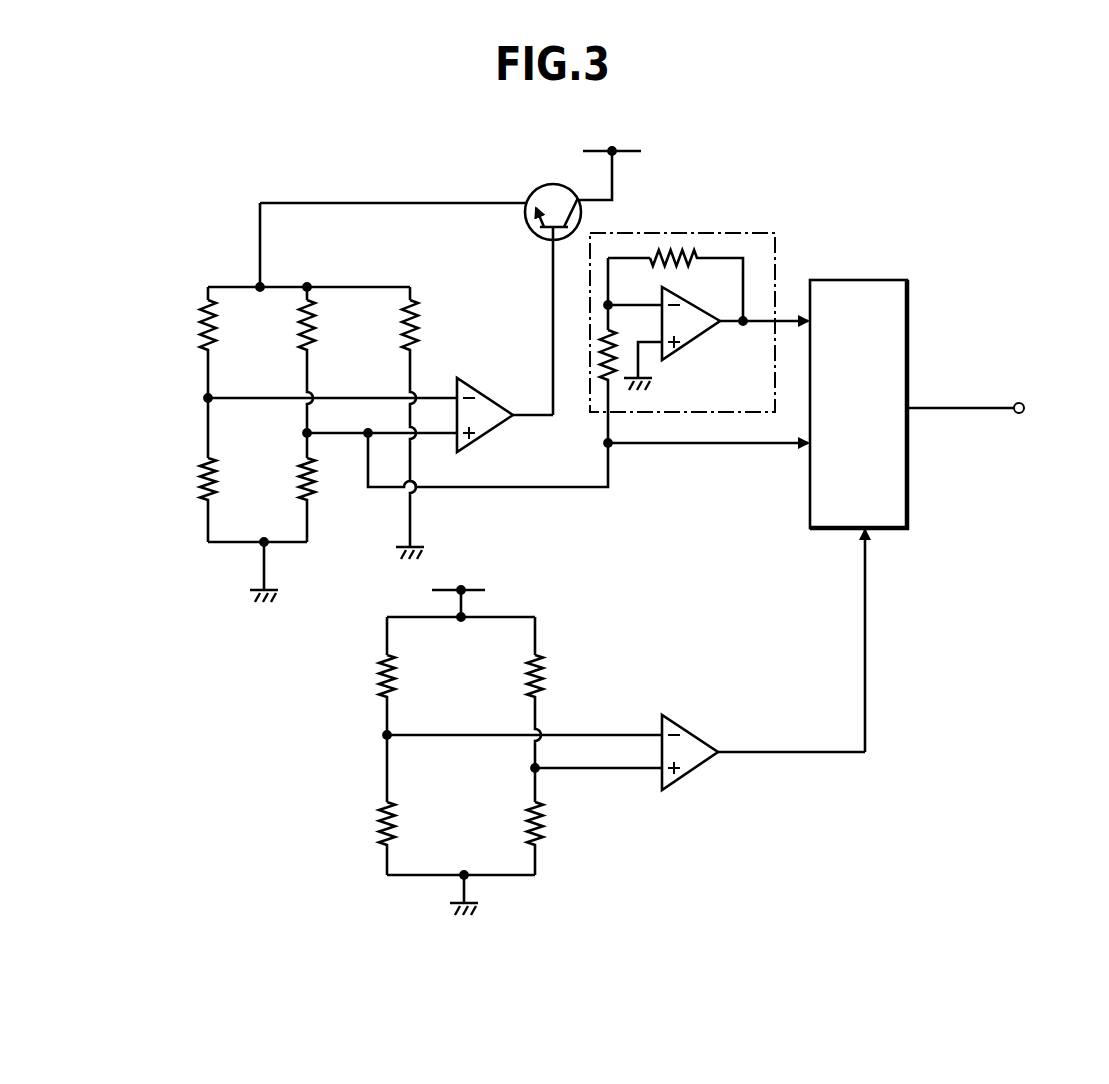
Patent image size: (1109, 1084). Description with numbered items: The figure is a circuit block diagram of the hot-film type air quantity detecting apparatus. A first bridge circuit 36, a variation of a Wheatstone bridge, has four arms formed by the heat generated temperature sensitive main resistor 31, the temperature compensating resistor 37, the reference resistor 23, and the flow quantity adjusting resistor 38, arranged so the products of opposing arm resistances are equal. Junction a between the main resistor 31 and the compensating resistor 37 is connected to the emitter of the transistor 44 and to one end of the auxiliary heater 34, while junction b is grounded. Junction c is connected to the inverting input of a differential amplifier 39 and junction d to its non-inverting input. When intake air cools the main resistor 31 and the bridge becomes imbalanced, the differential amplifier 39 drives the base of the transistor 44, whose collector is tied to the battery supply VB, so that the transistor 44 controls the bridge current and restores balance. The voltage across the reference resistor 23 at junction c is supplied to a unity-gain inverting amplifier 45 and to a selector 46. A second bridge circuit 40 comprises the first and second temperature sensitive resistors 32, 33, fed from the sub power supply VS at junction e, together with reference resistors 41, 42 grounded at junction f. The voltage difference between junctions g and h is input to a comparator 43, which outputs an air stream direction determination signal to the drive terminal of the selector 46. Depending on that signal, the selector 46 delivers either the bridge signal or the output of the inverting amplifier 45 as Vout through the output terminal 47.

The first bridge circuit 36 is at (204, 272).
The temperature compensating resistor 37 is at (203, 346).
The heat generated temperature sensitive main resistor 31 is at (315, 302).
The auxiliary heater 34 is at (448, 300).
The flow quantity adjusting resistor 38 is at (202, 499).
The reference resistor 23 is at (317, 498).
The differential amplifier 39 is at (497, 428).
The transistor 44 is at (540, 190).
The inverting amplifier 45 is at (717, 232).
The selector 46 is at (907, 315).
The output terminal 47 is at (1019, 402).
The second bridge circuit 40 is at (548, 596).
The first temperature sensitive resistor 32 is at (384, 694).
The second temperature sensitive resistor 33 is at (539, 652).
The reference resistor 41 is at (380, 830).
The reference resistor 42 is at (547, 832).
The comparator 43 is at (703, 738).